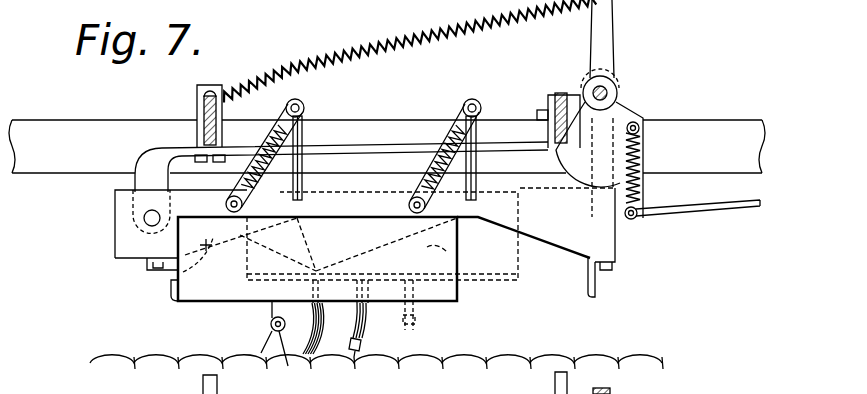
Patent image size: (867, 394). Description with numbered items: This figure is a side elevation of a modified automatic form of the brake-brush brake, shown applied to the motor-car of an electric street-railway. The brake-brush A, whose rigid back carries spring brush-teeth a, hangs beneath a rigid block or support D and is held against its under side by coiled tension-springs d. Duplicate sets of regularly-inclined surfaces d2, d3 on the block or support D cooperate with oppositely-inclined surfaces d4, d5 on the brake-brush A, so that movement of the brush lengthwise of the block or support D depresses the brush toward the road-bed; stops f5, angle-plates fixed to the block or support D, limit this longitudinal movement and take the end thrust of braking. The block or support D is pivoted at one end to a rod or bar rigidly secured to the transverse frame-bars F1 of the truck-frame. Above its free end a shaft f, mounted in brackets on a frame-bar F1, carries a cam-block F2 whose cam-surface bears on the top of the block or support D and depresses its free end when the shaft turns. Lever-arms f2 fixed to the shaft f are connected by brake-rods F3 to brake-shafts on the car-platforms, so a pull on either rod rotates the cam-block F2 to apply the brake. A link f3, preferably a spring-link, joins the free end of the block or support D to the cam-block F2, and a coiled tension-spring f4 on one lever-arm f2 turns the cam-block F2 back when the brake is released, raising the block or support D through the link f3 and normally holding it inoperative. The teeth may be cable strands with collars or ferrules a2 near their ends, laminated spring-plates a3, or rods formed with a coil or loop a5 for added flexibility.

The transverse frame-bar F1 is at (150, 160).
The cam-block F2 is at (705, 103).
The brake-rod F3 is at (688, 210).
The shaft f is at (610, 93).
The lever-arm f2 is at (605, 23).
The spring-link f3 is at (641, 190).
The coiled tension-spring f4 is at (327, 62).
The stop f5 is at (613, 286).
The coiled tension-spring d is at (265, 118).
The inclined surface d2 is at (304, 113).
The inclined surface d3 is at (479, 236).
The oppositely-inclined surface d4 is at (470, 264).
The oppositely-inclined surface d5 is at (183, 275).
The block or support D is at (365, 199).
The brake-brush A is at (203, 283).
The brush-tooth a is at (358, 348).
The collar or ferrule a2 is at (430, 304).
The spring-plate a3 is at (317, 355).
The coil or loop a5 is at (280, 346).